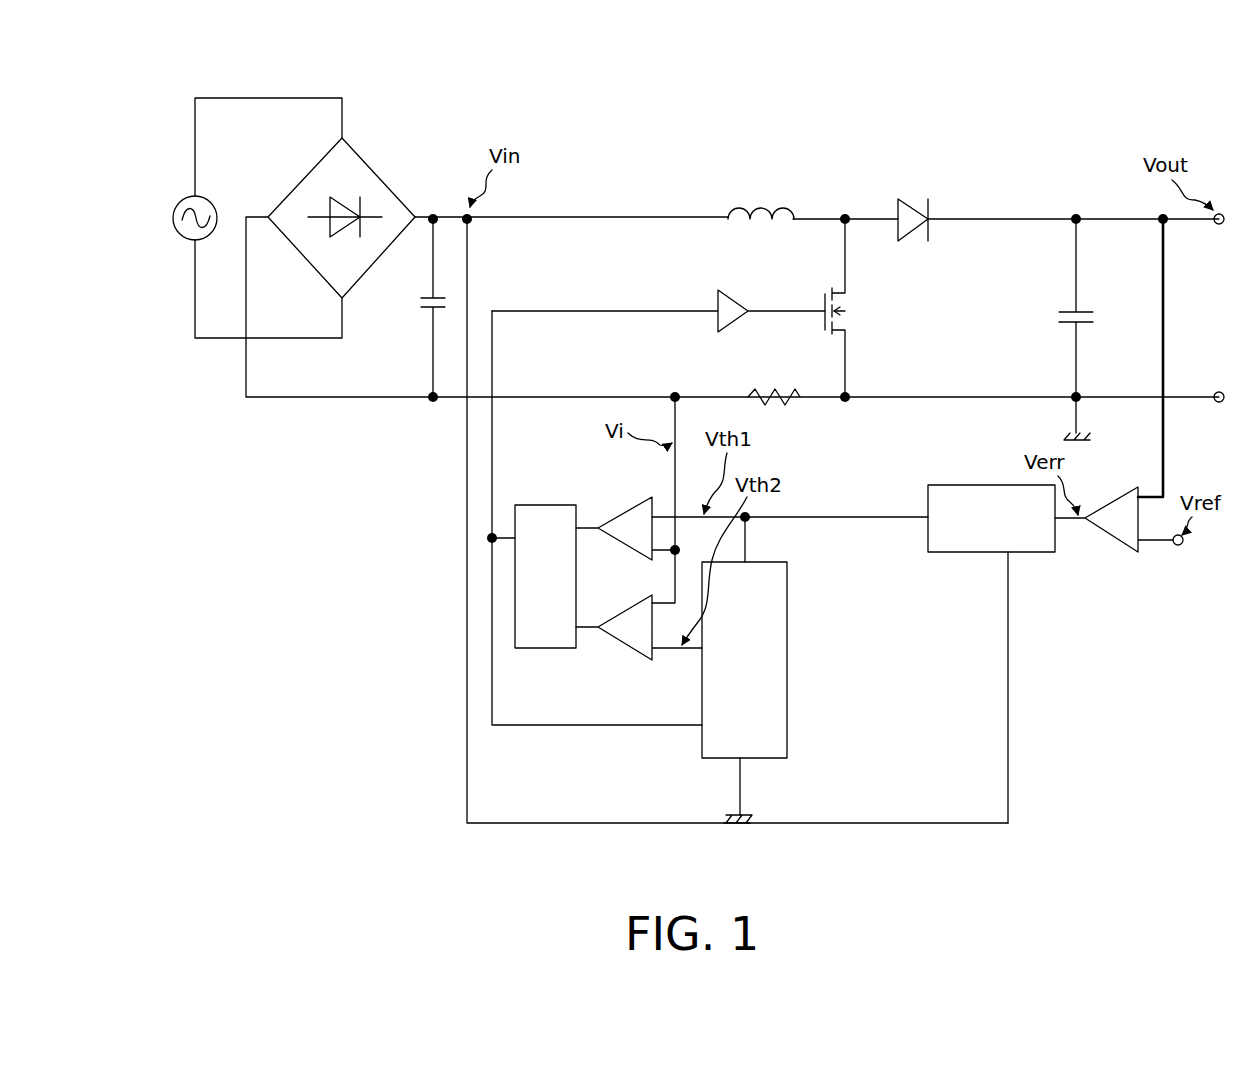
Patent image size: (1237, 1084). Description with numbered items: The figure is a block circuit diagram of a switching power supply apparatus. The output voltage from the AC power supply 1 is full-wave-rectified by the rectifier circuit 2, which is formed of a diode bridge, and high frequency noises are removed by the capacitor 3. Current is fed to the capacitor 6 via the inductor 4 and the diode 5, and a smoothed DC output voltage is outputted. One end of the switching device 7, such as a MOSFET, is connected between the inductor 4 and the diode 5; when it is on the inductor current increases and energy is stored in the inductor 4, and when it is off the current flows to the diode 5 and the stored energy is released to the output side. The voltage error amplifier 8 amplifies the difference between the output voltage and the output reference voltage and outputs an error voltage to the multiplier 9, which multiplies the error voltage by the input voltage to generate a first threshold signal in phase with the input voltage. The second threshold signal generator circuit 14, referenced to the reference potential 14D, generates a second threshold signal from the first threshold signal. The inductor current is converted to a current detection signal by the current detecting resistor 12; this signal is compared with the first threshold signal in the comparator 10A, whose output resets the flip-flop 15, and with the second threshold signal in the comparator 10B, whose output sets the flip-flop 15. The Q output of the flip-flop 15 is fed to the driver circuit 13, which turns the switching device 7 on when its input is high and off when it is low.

The AC power supply 1 is at (187, 235).
The rectifier circuit 2 is at (365, 178).
The capacitor 3 is at (424, 306).
The inductor 4 is at (766, 196).
The diode 5 is at (921, 205).
The capacitor 6 is at (1066, 311).
The switching device 7 is at (856, 313).
The voltage error amplifier 8 is at (1119, 537).
The multiplier 9 is at (1030, 556).
The comparator 10A is at (628, 513).
The comparator 10B is at (620, 646).
The current detecting resistor 12 is at (754, 392).
The driver circuit 13 is at (748, 281).
The second threshold signal generator circuit 14 is at (791, 681).
The reference potential 14D is at (710, 815).
The flip-flop 15 is at (512, 593).